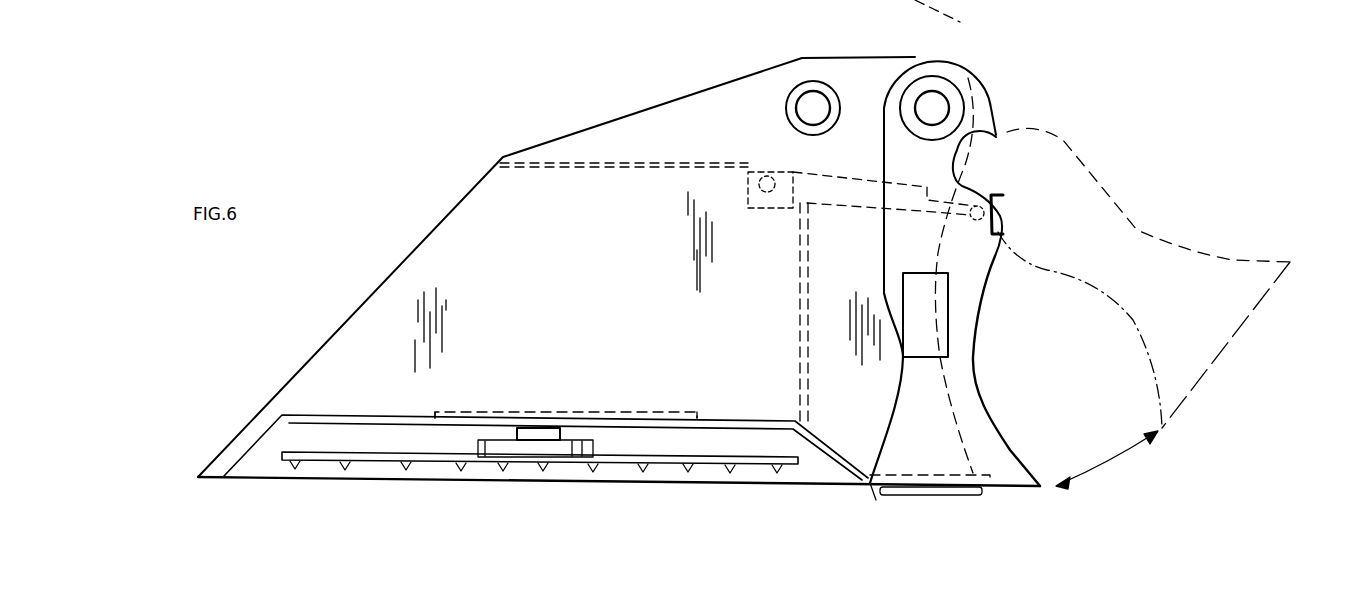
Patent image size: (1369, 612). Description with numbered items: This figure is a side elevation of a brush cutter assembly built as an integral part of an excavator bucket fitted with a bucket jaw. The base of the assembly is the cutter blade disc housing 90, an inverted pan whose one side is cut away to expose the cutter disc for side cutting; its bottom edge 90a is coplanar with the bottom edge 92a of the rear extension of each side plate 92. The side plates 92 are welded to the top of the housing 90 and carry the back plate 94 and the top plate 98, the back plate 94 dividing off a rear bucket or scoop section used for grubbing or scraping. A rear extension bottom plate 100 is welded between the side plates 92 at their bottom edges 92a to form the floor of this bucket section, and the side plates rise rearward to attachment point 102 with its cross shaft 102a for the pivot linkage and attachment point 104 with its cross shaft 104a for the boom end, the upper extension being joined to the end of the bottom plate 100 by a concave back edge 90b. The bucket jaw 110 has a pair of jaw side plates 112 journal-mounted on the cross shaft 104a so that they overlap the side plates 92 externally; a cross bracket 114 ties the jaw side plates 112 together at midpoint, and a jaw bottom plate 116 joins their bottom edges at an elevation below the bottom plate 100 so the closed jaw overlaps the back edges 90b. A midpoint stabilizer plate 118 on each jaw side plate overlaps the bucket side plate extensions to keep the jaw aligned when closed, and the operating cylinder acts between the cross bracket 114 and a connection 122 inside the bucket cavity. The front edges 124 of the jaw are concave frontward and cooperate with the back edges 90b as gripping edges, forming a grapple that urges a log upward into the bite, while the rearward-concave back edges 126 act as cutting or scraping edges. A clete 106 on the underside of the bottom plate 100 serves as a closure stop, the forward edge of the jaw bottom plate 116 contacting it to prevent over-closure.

The cutter blade disc housing 90 is at (240, 455).
The bottom of the housing pan edge 90a is at (663, 483).
The concave back edge 90b is at (965, 440).
The side plates 92 is at (515, 305).
The bottom edge 92a is at (925, 477).
The back plate 94 is at (798, 268).
The top plate 98 is at (605, 169).
The rear extension bottom plate 100 is at (892, 426).
The attachment point 102 is at (823, 83).
The cross shaft 102a is at (805, 110).
The attachment point 104 is at (952, 90).
The cross shaft 104a is at (950, 108).
The clete 106 is at (873, 490).
The bucket jaw 110 is at (1014, 170).
The jaw side plates 112 is at (967, 298).
The cross bracket 114 is at (1003, 220).
The jaw bottom plate 116 is at (1010, 487).
The midpoint stabilizer plate 118 is at (948, 337).
The connection 122 is at (752, 168).
The front edges 124 is at (893, 402).
The back edges 126 is at (977, 377).